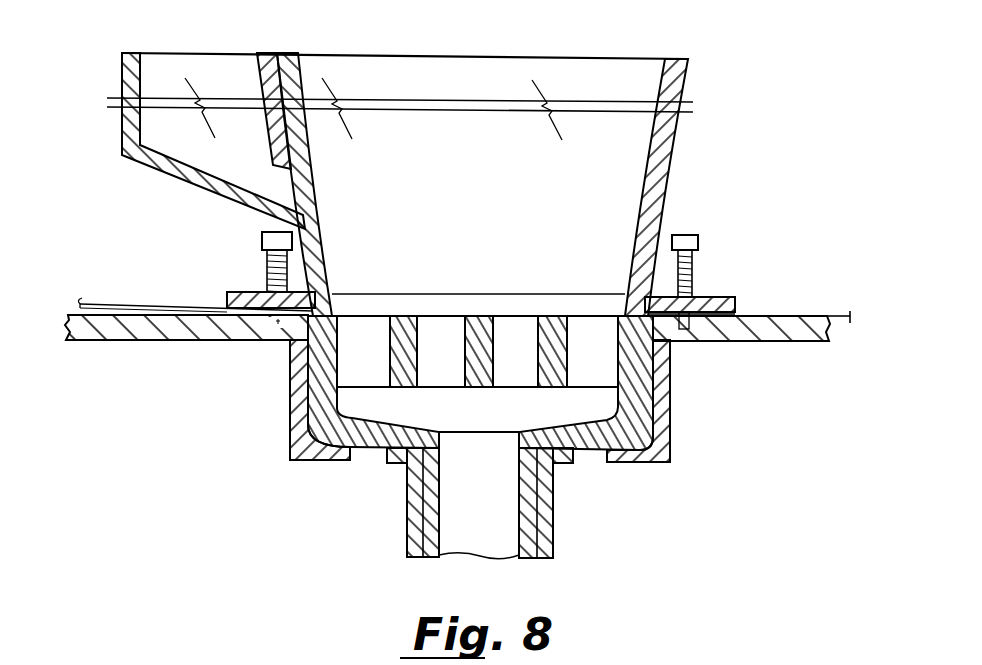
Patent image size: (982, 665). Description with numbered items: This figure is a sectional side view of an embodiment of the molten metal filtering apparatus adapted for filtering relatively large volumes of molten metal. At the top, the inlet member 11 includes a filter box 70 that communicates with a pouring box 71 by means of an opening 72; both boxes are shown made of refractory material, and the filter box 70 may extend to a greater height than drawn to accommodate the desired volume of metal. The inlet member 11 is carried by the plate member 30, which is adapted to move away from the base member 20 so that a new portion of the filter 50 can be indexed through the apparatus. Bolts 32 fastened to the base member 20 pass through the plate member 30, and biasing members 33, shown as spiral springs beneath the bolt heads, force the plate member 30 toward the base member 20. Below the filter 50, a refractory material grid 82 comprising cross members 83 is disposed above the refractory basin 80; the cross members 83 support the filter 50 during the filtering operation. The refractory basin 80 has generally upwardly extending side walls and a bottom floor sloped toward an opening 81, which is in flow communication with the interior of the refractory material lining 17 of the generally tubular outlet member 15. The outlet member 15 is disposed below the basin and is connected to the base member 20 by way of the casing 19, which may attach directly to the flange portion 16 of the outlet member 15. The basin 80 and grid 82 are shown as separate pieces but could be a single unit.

The inlet member 11 is at (593, 80).
The filter box 70 is at (297, 63).
The pouring box 71 is at (130, 78).
The opening 72 is at (322, 212).
The bolts 32 is at (273, 237).
The biasing members 33 is at (265, 265).
The plate member 30 is at (730, 298).
The filter 50 is at (113, 303).
The base member 20 is at (777, 333).
The casing 19 is at (300, 410).
The refractory material grid 82 is at (638, 362).
The cross members 83 is at (547, 320).
The opening 81 is at (517, 442).
The refractory basin 80 is at (598, 433).
The flange portion 16 is at (395, 463).
The outlet member 15 is at (408, 522).
The refractory material lining 17 is at (433, 543).